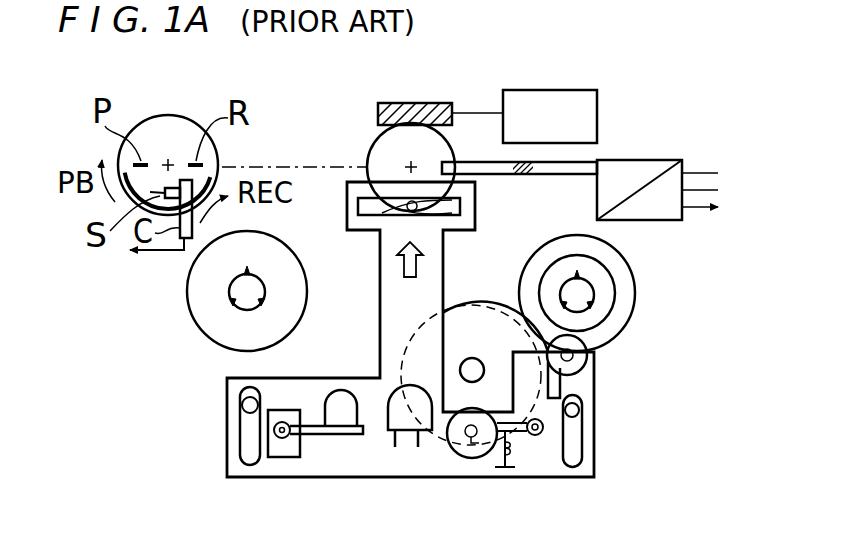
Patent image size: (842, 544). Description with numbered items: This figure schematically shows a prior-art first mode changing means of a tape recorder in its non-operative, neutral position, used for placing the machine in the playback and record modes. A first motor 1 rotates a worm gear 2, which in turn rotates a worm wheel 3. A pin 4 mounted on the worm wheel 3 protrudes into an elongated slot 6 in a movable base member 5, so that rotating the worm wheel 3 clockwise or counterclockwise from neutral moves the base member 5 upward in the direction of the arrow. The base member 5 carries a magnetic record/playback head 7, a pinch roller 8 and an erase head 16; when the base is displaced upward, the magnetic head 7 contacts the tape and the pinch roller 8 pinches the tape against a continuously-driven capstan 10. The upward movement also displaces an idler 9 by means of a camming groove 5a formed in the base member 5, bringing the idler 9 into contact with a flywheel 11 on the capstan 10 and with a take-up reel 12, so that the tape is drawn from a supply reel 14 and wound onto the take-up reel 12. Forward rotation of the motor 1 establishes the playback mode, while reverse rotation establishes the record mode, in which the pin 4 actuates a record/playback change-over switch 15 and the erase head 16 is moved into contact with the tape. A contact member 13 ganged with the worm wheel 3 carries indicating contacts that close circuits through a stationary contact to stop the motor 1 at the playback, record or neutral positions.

The first motor 1 is at (549, 90).
The worm gear 2 is at (420, 103).
The worm wheel 3 is at (372, 138).
The pin 4 is at (453, 212).
The movable base member 5 is at (380, 297).
The camming groove 5a is at (553, 380).
The elongated slot 6 is at (467, 205).
The magnetic record/playback head 7 is at (408, 430).
The pinch roller 8 is at (462, 450).
The idler 9 is at (588, 364).
The capstan 10 is at (472, 358).
The flywheel 11 is at (472, 305).
The take-up reel 12 is at (636, 296).
The contact member 13 is at (170, 115).
The supply reel 14 is at (187, 295).
The record/playback change-over switch 15 is at (648, 160).
The erase head 16 is at (338, 420).